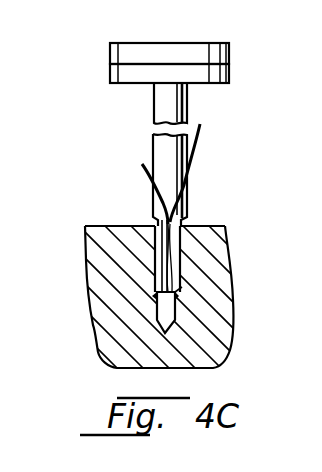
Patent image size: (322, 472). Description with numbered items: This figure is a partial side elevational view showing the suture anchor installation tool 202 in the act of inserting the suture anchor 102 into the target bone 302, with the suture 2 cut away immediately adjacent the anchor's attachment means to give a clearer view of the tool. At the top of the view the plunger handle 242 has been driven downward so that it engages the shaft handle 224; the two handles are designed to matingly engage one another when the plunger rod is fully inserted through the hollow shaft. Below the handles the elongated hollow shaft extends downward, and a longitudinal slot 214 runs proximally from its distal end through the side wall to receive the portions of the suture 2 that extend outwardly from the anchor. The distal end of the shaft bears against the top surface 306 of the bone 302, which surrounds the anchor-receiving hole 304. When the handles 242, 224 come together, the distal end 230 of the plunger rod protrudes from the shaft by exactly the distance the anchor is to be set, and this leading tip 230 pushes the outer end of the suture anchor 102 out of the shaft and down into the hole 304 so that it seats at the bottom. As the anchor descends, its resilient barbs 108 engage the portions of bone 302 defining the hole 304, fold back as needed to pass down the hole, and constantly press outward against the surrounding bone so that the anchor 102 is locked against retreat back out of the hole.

The handle 242 is at (231, 51).
The handle 224 is at (231, 71).
The suture anchor installation tool 202 is at (154, 100).
The longitudinal slot 214 is at (186, 187).
The suture 2 is at (198, 137).
The target bone 302 is at (97, 332).
The distal end of plunger rod 230 is at (122, 226).
The top surface 306 is at (211, 226).
The hole 304 is at (157, 248).
The barbs 108 is at (149, 295).
The suture anchor 102 is at (180, 301).